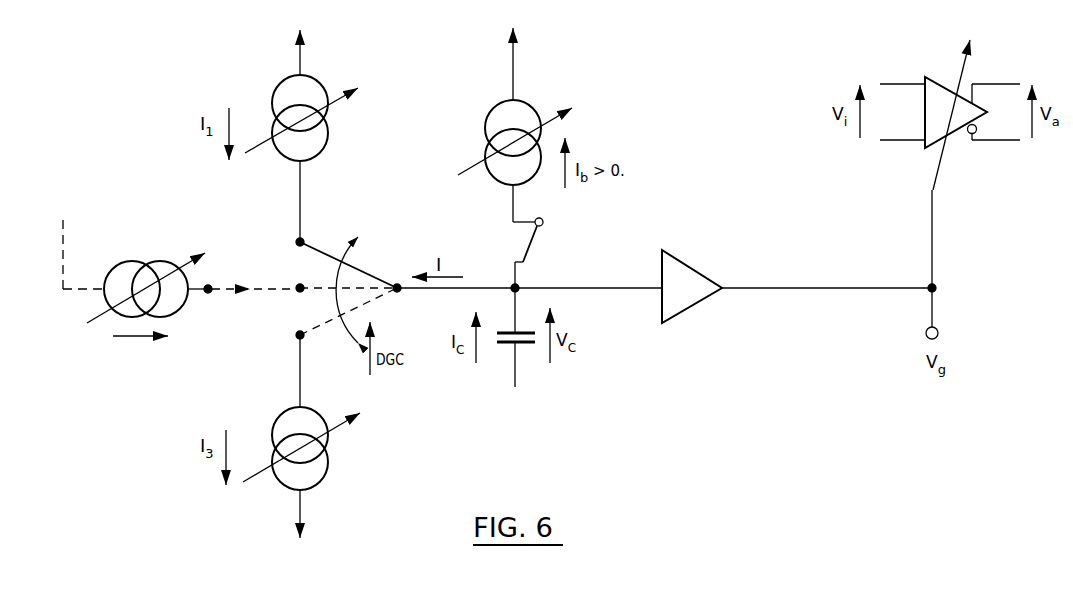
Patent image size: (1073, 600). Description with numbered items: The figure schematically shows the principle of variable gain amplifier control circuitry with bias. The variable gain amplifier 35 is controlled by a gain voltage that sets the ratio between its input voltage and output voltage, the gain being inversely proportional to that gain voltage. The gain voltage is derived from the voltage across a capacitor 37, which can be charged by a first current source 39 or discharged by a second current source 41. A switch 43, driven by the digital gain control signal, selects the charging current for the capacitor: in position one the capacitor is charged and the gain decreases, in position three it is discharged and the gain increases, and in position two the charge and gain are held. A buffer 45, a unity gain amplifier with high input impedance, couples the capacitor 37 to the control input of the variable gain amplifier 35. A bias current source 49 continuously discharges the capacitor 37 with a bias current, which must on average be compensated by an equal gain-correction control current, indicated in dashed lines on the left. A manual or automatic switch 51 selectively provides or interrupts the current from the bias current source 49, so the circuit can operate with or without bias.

The variable gain amplifier 35 is at (951, 142).
The capacitor 37 is at (504, 345).
The current source 39 is at (329, 140).
The current source 41 is at (326, 478).
The switch 43 is at (364, 262).
The buffer 45 is at (699, 305).
The bias current source 49 is at (522, 100).
The switch 51 is at (541, 236).